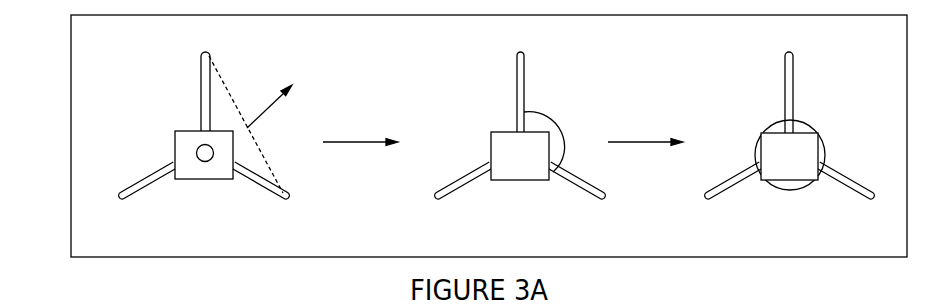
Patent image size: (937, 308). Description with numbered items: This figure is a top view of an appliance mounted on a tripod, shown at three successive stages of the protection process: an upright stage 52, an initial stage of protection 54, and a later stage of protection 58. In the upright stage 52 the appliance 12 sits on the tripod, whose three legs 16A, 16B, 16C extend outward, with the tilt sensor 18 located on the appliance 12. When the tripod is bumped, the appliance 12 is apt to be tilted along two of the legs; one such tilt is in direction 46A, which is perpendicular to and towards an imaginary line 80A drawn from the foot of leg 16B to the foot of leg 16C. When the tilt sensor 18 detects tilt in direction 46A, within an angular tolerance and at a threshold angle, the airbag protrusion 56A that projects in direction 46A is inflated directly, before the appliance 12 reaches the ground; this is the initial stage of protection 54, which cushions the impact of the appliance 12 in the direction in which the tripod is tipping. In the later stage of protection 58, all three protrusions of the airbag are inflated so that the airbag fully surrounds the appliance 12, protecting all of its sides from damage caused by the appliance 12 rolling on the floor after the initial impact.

The upright stage 52 is at (140, 109).
The appliance 12 is at (175, 145).
The leg 16A is at (131, 196).
The leg 16B is at (276, 196).
The leg 16C is at (201, 78).
The tilt sensor 18 is at (205, 162).
The direction 46A is at (265, 102).
The imaginary line 80A is at (264, 153).
The initial stage of protection 54 is at (484, 109).
The airbag protrusion 56A is at (566, 132).
The later stage of protection 58 is at (764, 109).